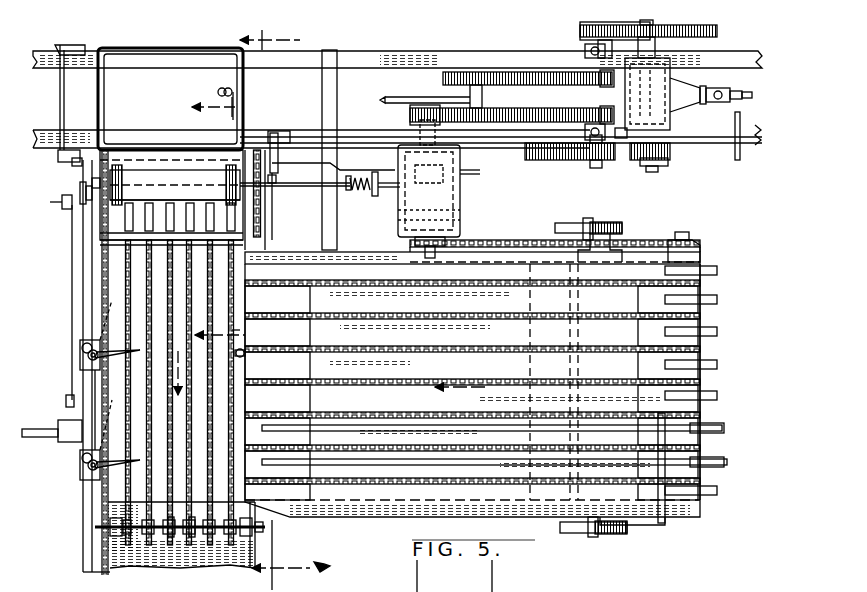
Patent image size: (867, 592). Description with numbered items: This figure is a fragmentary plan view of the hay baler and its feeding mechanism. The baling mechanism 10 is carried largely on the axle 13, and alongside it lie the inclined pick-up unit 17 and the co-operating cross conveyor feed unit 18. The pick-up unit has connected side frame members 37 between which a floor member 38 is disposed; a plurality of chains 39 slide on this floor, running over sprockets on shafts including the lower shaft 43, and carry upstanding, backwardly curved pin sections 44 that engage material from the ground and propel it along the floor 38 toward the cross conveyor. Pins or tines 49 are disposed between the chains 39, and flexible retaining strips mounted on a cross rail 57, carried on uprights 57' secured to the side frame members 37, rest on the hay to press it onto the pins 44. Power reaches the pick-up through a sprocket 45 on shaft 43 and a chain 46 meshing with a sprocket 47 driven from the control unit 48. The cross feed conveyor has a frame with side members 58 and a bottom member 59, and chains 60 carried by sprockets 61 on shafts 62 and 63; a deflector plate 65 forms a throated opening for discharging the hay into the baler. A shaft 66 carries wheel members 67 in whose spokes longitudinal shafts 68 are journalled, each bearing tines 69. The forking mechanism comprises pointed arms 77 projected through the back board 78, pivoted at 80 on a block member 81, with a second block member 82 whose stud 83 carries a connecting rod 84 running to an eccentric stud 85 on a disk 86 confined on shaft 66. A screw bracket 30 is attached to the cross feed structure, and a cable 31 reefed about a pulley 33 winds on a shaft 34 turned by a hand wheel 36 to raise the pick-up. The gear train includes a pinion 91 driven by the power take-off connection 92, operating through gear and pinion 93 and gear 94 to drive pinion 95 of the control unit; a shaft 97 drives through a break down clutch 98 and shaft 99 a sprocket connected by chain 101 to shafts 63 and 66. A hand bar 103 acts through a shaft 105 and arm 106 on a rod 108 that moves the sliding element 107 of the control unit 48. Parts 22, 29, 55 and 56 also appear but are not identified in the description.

The baling mechanism 10 is at (397, 59).
The axle 13 is at (330, 88).
The pick-up unit 17 is at (495, 379).
The cross conveyor feed unit 18 is at (100, 550).
The gear 22 is at (600, 226).
The rod 29 is at (28, 437).
The bracket 30 is at (65, 420).
The cable 31 is at (270, 235).
The pulley 33 is at (278, 178).
The shaft 34 is at (276, 131).
The hand wheel 36 is at (741, 150).
The side frame members 37 is at (462, 263).
The floor member 38 is at (435, 340).
The chains 39 is at (480, 314).
The lower shaft 43 is at (637, 233).
The pin sections 44 is at (540, 350).
The sprocket 45 is at (698, 244).
The chain 46 is at (522, 240).
The sprocket 47 is at (414, 242).
The control unit 48 is at (462, 215).
The pins or tines 49 is at (718, 272).
The pin 55 is at (300, 350).
The rod 56 is at (722, 426).
The cross rail 57 is at (694, 475).
The uprights 57' is at (641, 530).
The side members 58 is at (110, 505).
The bottom member 59 is at (148, 556).
The chains 60 is at (125, 285).
The sprockets 61 is at (182, 533).
The shaft 62 is at (98, 527).
The shaft 63 is at (92, 182).
The deflector plate 65 is at (135, 236).
The shaft 66 is at (86, 195).
The wheel members 67 is at (118, 165).
The longitudinal shafts 68 is at (145, 195).
The tines 69 is at (135, 248).
The pointed arms 77 is at (125, 355).
The back board 78 is at (100, 285).
The pivot 80 is at (88, 348).
The block member 81 is at (98, 380).
The block member 82 is at (66, 400).
The stud 83 is at (75, 395).
The connecting rod 84 is at (72, 290).
The stud 85 is at (62, 204).
The disk 86 is at (80, 190).
The pinion 91 is at (660, 160).
The power take-off connection 92 is at (725, 92).
The gear and pinion 93 is at (615, 160).
The gear 94 is at (570, 108).
The pinion 95 is at (408, 114).
The shaft 97 is at (396, 193).
The break down clutch 98 is at (362, 192).
The shaft 99 is at (322, 190).
The chain 101 is at (320, 188).
The hand bar 103 is at (88, 50).
The shaft 105 is at (62, 96).
The arm 106 is at (58, 155).
The sliding element 107 is at (481, 172).
The rod 108 is at (345, 160).